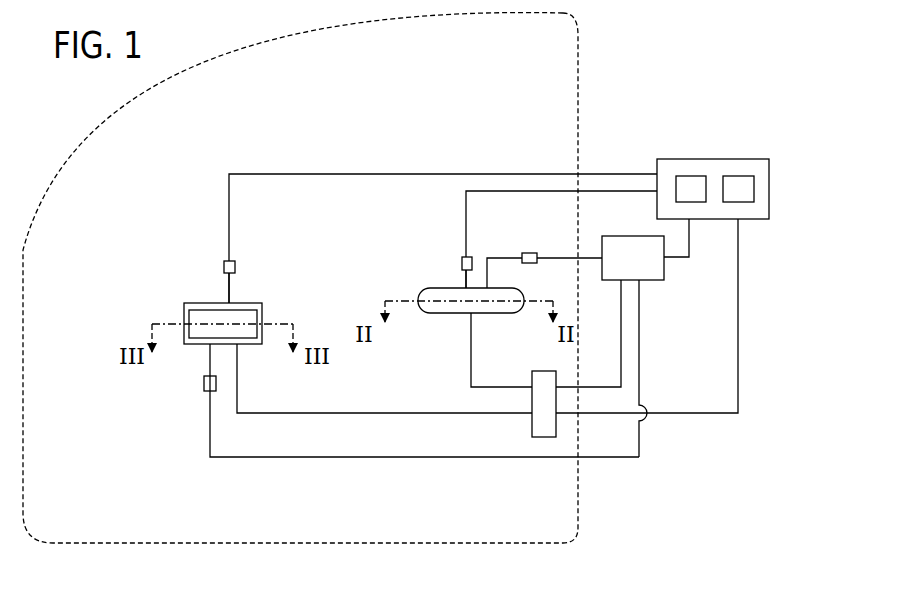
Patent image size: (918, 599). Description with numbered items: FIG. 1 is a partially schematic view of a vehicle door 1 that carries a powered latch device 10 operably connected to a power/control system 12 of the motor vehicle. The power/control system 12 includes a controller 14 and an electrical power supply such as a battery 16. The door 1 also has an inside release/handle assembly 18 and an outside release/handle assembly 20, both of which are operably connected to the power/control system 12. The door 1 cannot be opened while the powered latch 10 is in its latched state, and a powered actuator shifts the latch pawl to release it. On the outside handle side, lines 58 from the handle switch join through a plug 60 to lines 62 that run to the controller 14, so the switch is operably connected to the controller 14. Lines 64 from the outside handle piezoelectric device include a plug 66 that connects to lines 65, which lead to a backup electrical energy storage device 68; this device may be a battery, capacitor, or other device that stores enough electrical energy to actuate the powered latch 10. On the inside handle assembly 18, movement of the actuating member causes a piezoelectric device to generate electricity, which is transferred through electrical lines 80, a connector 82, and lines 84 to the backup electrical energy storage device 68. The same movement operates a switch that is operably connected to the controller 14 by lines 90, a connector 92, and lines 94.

The vehicle door 1 is at (600, 58).
The powered latch device 10 is at (530, 400).
The power/control system 12 is at (770, 188).
The controller 14 is at (697, 176).
The battery 16 is at (742, 176).
The inside release/handle assembly 18 is at (188, 300).
The outside release/handle assembly 20 is at (425, 284).
The lines 58 is at (465, 280).
The plug 60 is at (463, 257).
The lines 62 is at (465, 222).
The lines 64 is at (508, 255).
The lines 65 is at (557, 258).
The plug 66 is at (530, 253).
The backup electrical energy storage device 68 is at (645, 282).
The electrical lines 80 is at (208, 362).
The connector 82 is at (205, 383).
The lines 84 is at (247, 457).
The lines 90 is at (230, 290).
The connector 92 is at (224, 267).
The lines 94 is at (228, 213).